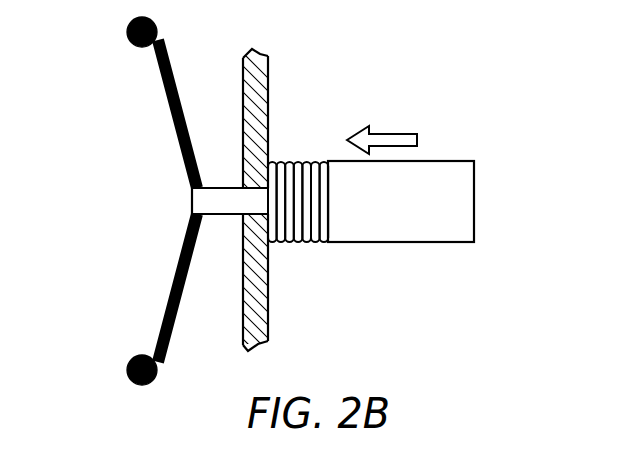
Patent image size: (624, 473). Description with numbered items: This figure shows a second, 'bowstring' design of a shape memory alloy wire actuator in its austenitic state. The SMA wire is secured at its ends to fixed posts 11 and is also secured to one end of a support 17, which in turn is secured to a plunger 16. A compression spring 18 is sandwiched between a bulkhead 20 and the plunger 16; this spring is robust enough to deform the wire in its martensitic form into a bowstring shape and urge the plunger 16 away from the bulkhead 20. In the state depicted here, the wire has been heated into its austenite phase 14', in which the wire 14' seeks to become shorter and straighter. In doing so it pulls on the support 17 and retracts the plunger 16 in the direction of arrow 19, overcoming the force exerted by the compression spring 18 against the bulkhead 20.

The fixed posts 11 is at (128, 34).
The austenite phase of SMA wire 14' is at (200, 184).
The plunger 16 is at (435, 160).
The support 17 is at (223, 187).
The compression spring 18 is at (303, 230).
The arrow 19 is at (392, 133).
The bulkhead 20 is at (268, 92).